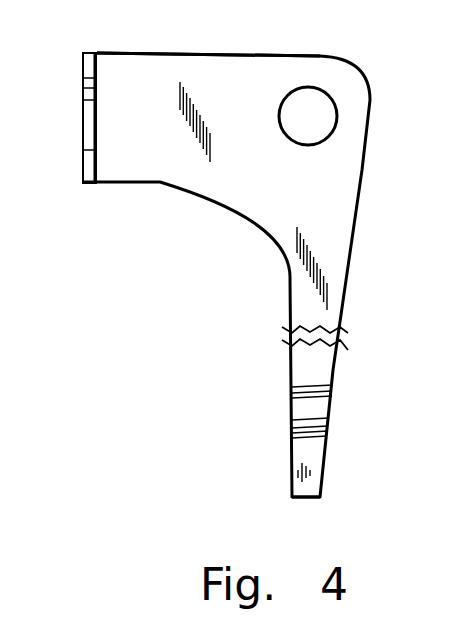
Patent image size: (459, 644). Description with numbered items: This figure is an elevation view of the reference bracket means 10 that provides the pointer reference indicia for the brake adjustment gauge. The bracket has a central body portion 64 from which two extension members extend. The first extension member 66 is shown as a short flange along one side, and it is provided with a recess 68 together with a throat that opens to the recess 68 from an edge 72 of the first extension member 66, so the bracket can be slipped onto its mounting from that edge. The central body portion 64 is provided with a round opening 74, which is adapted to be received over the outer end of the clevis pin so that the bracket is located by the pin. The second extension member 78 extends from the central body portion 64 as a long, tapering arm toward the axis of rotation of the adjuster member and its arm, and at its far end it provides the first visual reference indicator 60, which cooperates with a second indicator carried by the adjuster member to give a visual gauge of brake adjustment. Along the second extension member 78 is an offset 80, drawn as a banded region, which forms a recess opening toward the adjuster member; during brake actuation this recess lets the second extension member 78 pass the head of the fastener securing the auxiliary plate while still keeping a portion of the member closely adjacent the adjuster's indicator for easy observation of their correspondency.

The reference bracket means 10 is at (369, 125).
The first visual reference indicator 60 is at (314, 475).
The central body portion 64 is at (207, 70).
The first extension member 66 is at (84, 170).
The recess 68 is at (90, 117).
The edge 72 is at (84, 66).
The opening 74 is at (281, 127).
The second extension member 78 is at (333, 310).
The offset 80 is at (305, 413).